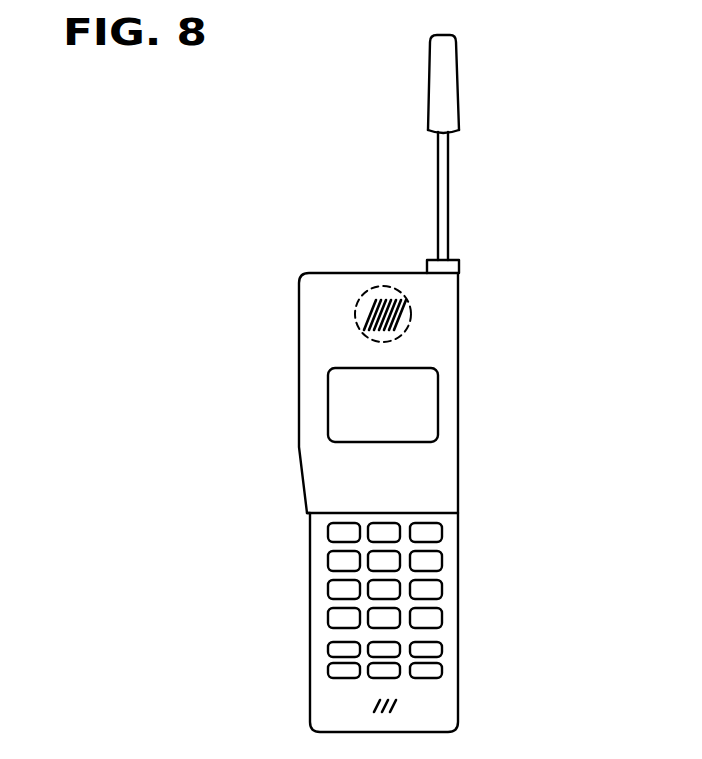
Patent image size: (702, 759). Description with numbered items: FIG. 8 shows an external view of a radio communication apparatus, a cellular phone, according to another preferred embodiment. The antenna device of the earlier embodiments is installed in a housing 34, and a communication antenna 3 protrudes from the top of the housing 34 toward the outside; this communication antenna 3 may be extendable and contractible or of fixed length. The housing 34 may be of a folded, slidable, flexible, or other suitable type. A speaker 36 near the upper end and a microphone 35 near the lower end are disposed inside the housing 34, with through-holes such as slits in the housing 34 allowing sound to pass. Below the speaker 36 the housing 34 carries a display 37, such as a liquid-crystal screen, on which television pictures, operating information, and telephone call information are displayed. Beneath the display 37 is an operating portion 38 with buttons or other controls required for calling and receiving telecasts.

The communication antenna 3 is at (449, 170).
The housing 34 is at (461, 450).
The microphone 35 is at (395, 703).
The speaker 36 is at (378, 289).
The display 37 is at (427, 401).
The operating portion 38 is at (465, 485).